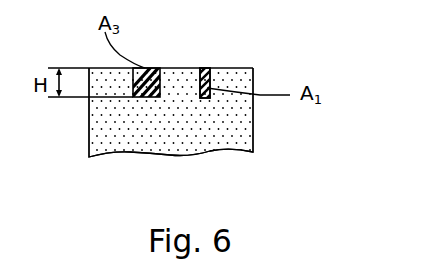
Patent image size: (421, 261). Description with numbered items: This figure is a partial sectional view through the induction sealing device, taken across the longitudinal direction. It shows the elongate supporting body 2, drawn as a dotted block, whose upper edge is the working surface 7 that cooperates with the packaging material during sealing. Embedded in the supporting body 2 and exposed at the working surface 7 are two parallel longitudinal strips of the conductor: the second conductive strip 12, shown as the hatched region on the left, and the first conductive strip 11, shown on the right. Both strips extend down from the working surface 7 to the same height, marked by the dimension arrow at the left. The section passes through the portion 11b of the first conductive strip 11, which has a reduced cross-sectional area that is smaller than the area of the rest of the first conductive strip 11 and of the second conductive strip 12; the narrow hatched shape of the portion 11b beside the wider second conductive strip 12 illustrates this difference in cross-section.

The supporting body 2 is at (115, 118).
The working surface 7 is at (176, 67).
The first conductive strip 11 is at (210, 92).
The portion of the first conductive strip 11b is at (204, 70).
The second conductive strip 12 is at (145, 100).